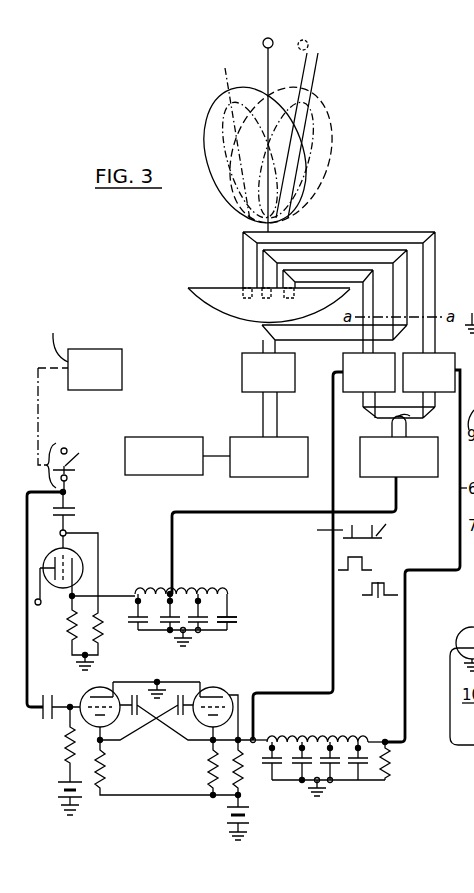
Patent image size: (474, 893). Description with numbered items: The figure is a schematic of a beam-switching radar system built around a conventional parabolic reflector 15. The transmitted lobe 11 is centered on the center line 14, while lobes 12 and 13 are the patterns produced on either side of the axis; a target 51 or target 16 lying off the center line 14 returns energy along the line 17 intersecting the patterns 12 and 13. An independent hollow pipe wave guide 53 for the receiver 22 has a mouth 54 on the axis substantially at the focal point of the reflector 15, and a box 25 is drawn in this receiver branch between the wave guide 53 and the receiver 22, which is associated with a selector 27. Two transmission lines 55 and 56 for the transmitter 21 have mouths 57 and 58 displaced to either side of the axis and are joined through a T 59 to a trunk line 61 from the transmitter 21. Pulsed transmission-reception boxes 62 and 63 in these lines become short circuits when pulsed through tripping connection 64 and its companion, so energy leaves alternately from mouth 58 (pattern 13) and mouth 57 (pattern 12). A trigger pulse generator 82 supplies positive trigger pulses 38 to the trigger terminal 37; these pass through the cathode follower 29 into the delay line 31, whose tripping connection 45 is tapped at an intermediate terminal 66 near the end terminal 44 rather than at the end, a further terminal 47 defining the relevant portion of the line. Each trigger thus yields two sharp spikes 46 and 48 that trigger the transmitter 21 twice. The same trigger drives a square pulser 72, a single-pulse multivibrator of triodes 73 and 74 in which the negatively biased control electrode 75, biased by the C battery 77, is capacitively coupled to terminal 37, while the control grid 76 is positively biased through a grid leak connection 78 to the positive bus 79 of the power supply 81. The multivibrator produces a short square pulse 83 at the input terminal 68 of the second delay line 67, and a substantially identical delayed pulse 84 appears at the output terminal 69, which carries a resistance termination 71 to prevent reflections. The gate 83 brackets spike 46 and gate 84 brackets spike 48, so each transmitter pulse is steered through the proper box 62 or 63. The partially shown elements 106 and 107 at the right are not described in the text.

The lobe 11 is at (267, 86).
The lobe 12 is at (206, 113).
The lobe 13 is at (336, 121).
The center line 14 is at (268, 68).
The parabolic reflector 15 is at (200, 294).
The target 16 is at (309, 44).
The line 17 is at (309, 69).
The transmitter 21 is at (377, 479).
The receiver 22 is at (256, 478).
The TR box 25 is at (250, 352).
The selector 27 is at (160, 476).
The cathode follower 29 is at (50, 558).
The delay line 31 is at (196, 591).
The trigger terminal 37 is at (67, 480).
The trigger pulse 38 is at (73, 460).
The end terminal 44 is at (100, 596).
The tripping connection 45 is at (397, 495).
The spike 46 is at (318, 530).
The terminal 47 is at (229, 600).
The spike 48 is at (376, 527).
The target 51 is at (263, 43).
The wave guide 53 is at (366, 257).
The mouth 54 is at (266, 298).
The transmission line 55 is at (335, 277).
The transmission line 56 is at (405, 237).
The mouth 57 is at (290, 298).
The mouth 58 is at (247, 298).
The T 59 is at (408, 417).
The trunk line 61 is at (397, 428).
The transmission-reception box 62 is at (343, 357).
The transmission-reception box 63 is at (445, 357).
The tripping connection 64 is at (331, 485).
The intermediate terminal 66 is at (171, 592).
The delay line 67 is at (329, 739).
The input terminal 68 is at (258, 741).
The output terminal 69 is at (381, 733).
The resistance termination 71 is at (393, 763).
The square pulser 72 is at (163, 748).
The triode 73 is at (101, 686).
The triode 74 is at (213, 686).
The control electrode 75 is at (85, 698).
The control grid 76 is at (222, 706).
The C battery 77 is at (56, 791).
The grid leak connection 78 is at (238, 766).
The positive bus 79 is at (180, 796).
The power supply 81 is at (251, 821).
The trigger pulse generator 82 is at (105, 353).
The square pulse 83 is at (364, 565).
The pulse 84 is at (380, 599).
The electron tube 106 is at (467, 638).
The circuit unit 107 is at (460, 665).